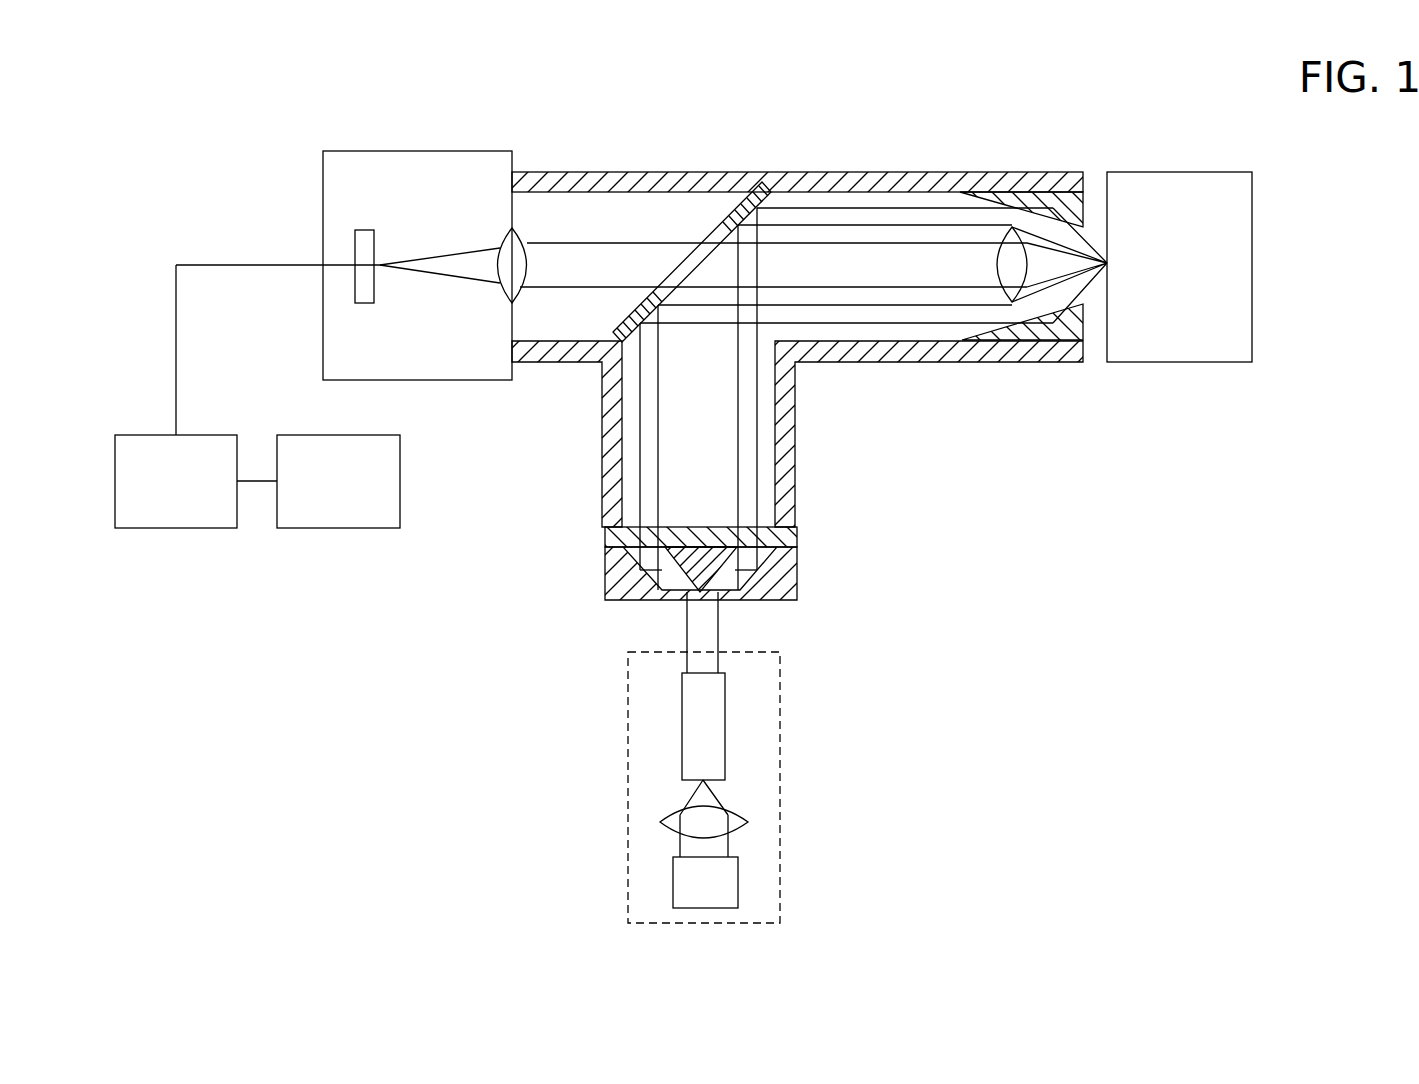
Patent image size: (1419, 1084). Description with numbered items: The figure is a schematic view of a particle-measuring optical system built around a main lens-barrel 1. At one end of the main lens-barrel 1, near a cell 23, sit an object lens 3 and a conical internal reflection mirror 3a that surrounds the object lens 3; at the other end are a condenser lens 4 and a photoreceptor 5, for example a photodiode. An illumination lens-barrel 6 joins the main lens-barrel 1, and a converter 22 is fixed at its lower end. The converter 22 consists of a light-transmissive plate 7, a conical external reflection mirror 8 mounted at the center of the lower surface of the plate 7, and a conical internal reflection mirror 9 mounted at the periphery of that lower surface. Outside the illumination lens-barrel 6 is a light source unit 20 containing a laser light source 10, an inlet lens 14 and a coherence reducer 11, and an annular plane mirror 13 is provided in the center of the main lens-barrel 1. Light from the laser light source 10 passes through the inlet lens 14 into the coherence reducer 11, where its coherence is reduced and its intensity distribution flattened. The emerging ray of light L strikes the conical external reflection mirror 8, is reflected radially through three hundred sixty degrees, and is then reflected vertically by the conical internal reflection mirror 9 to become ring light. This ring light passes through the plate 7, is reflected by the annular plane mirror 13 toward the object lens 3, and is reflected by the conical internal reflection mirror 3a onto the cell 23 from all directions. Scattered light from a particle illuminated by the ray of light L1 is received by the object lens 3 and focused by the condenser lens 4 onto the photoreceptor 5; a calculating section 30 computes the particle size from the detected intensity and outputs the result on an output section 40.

The main lens-barrel 1 is at (585, 178).
The object lens 3 is at (1002, 262).
The conical internal reflection mirror 3a is at (1040, 205).
The condenser lens 4 is at (508, 240).
The photoreceptor 5 is at (362, 240).
The illumination lens-barrel 6 is at (602, 445).
The light-transmissive plate 7 is at (605, 532).
The conical external reflection mirror 8 is at (687, 600).
The conical internal reflection mirror 9 is at (613, 600).
The laser light source 10 is at (683, 882).
The coherence reducer 11 is at (692, 712).
The annular plane mirror 13 is at (758, 182).
The inlet lens 14 is at (747, 818).
The light source unit 20 is at (628, 890).
The converter 22 is at (630, 594).
The cell 23 is at (1160, 188).
The calculating section 30 is at (170, 528).
The output section 40 is at (335, 528).
The ray of light L is at (710, 617).
The ray of light L1 is at (800, 215).